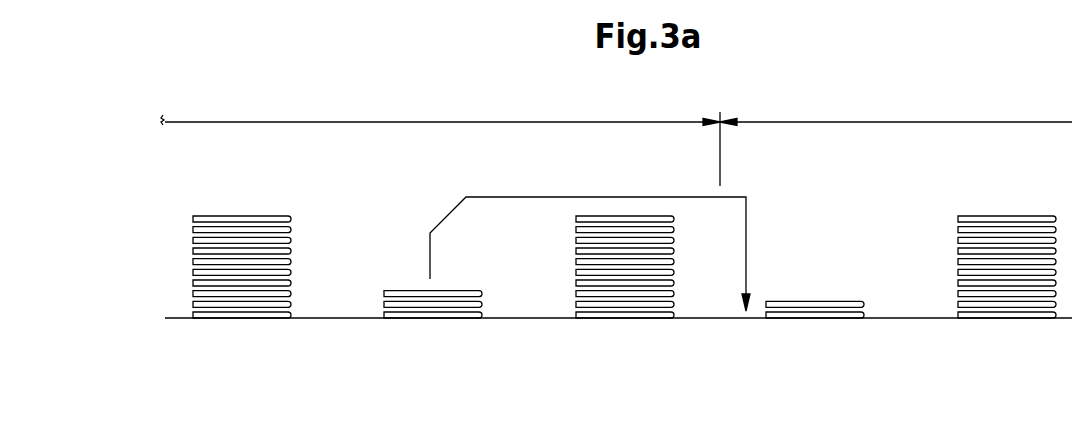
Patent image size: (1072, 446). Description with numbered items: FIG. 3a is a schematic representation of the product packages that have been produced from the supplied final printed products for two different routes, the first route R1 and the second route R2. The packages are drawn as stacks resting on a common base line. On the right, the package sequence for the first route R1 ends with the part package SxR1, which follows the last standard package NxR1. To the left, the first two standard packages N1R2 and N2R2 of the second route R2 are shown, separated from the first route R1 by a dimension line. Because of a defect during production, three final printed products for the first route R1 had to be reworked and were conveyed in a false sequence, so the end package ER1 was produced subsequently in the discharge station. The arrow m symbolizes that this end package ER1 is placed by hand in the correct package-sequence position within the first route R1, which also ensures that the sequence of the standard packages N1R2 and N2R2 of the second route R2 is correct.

The second standard package of the second route N2R2 is at (230, 305).
The end package of the first route ER1 is at (420, 310).
The first standard package of the second route N1R2 is at (612, 310).
The part package of the first route SxR1 is at (808, 305).
The last standard package of the first route NxR1 is at (993, 312).
The second route R2 is at (440, 139).
The first route R1 is at (896, 109).
The arrow symbolizing manual addition of end package m is at (590, 242).